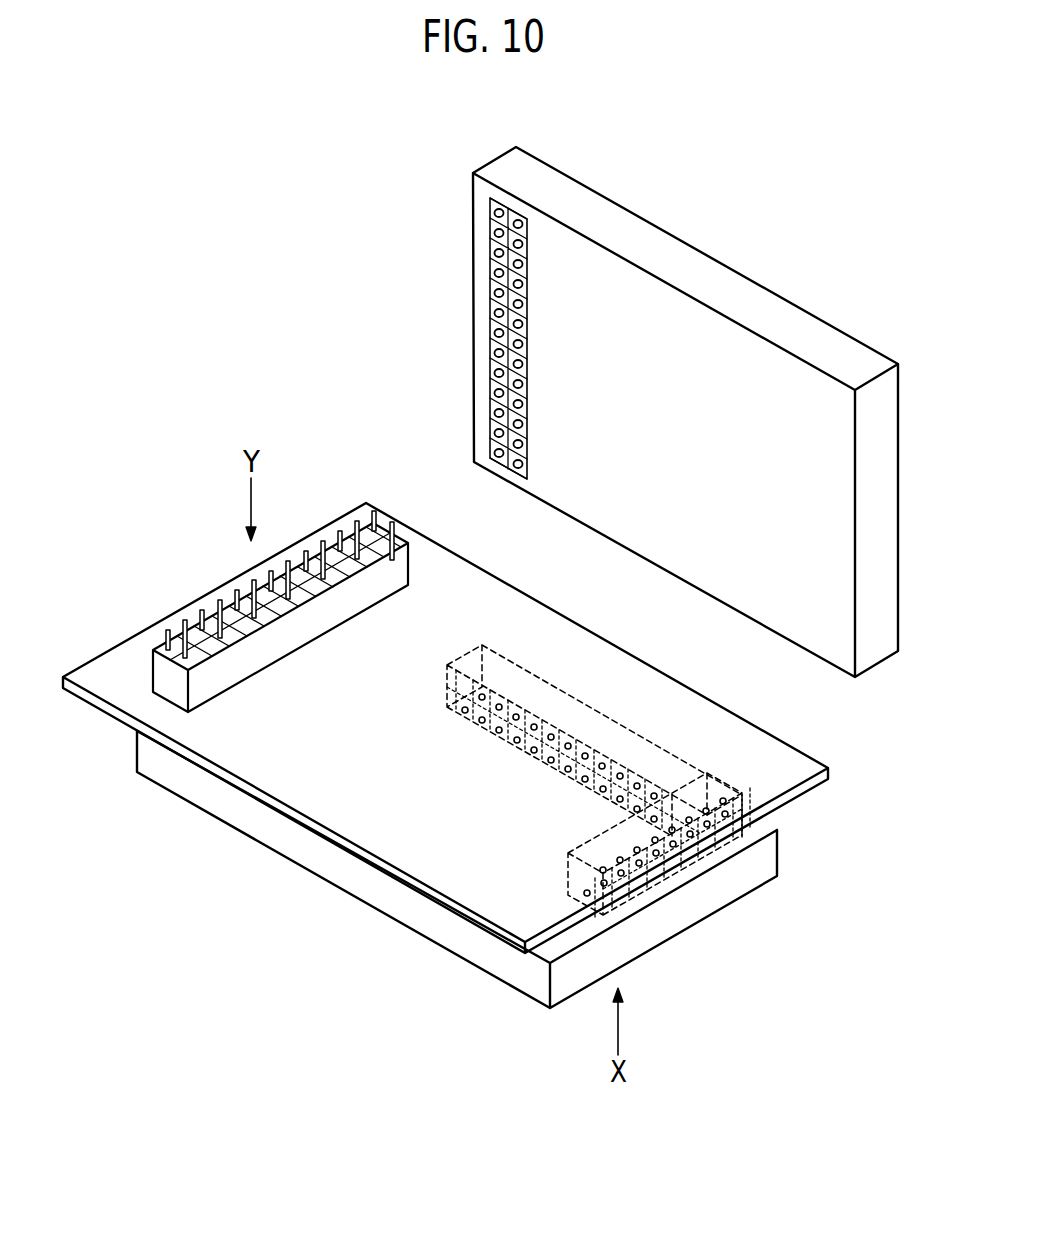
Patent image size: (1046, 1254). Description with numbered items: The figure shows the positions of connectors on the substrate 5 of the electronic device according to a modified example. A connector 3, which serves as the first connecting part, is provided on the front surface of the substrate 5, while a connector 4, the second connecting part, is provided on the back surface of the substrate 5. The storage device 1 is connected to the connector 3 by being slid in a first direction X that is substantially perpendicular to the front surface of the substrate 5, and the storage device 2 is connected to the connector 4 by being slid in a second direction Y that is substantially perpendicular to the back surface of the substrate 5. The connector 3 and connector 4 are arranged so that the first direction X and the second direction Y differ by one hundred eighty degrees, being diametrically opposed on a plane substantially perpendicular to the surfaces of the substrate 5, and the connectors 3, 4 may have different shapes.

The storage device 1 is at (702, 928).
The storage device 2 is at (812, 268).
The connector 3 is at (708, 787).
The connector 4 is at (252, 650).
The substrate 5 is at (840, 760).